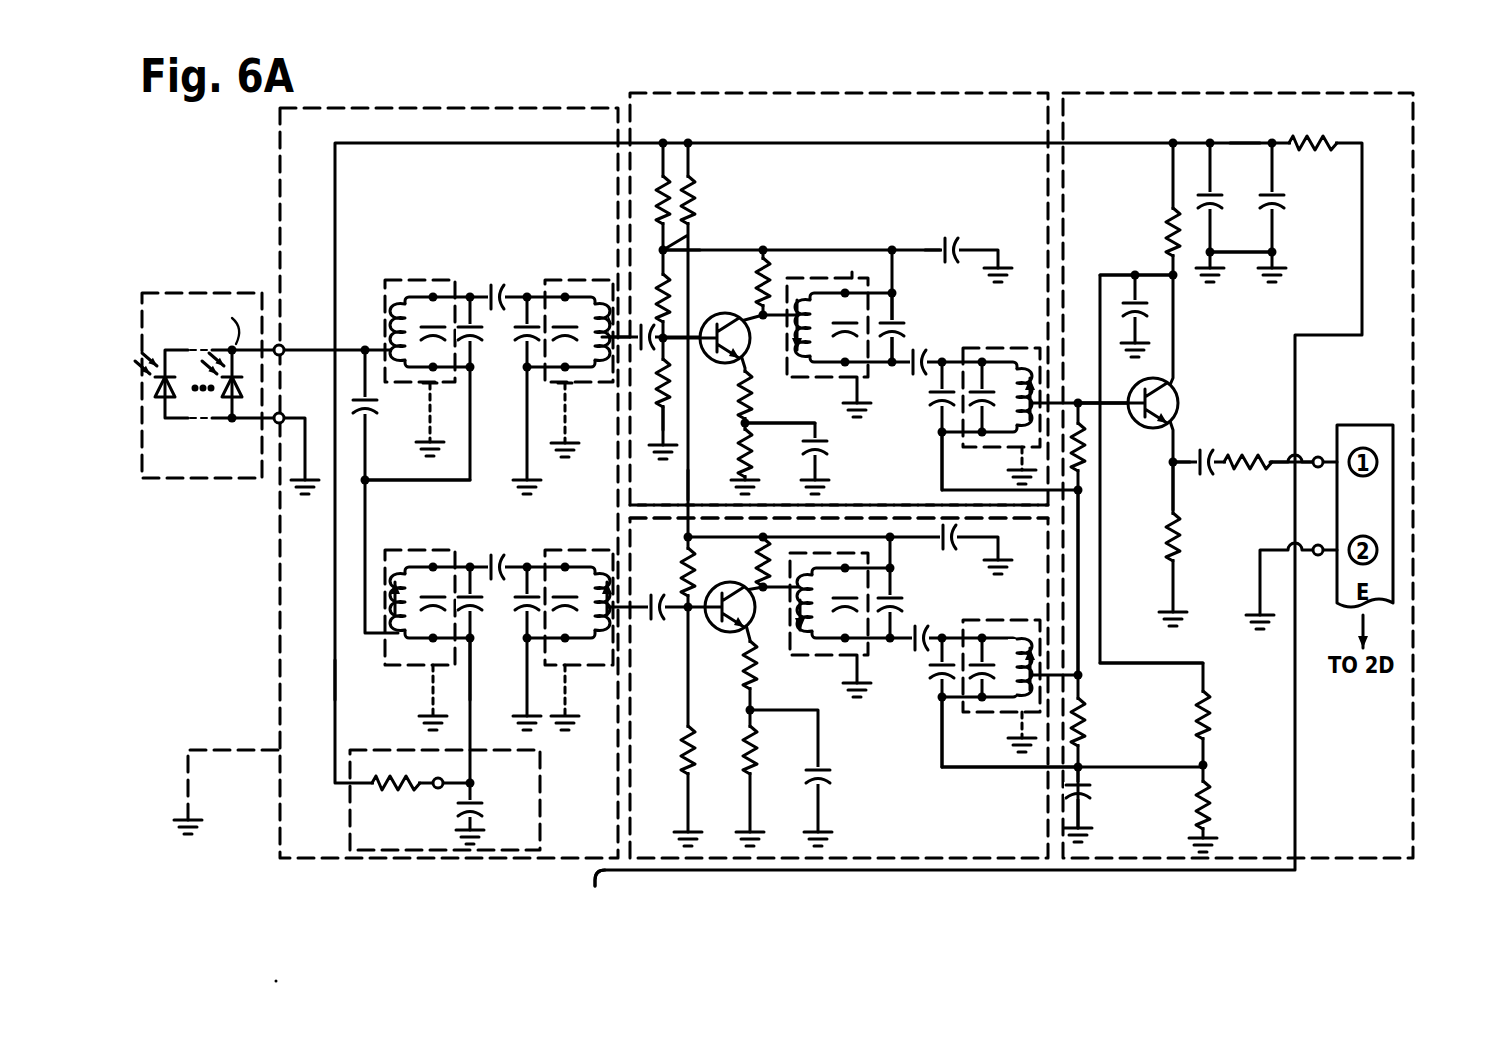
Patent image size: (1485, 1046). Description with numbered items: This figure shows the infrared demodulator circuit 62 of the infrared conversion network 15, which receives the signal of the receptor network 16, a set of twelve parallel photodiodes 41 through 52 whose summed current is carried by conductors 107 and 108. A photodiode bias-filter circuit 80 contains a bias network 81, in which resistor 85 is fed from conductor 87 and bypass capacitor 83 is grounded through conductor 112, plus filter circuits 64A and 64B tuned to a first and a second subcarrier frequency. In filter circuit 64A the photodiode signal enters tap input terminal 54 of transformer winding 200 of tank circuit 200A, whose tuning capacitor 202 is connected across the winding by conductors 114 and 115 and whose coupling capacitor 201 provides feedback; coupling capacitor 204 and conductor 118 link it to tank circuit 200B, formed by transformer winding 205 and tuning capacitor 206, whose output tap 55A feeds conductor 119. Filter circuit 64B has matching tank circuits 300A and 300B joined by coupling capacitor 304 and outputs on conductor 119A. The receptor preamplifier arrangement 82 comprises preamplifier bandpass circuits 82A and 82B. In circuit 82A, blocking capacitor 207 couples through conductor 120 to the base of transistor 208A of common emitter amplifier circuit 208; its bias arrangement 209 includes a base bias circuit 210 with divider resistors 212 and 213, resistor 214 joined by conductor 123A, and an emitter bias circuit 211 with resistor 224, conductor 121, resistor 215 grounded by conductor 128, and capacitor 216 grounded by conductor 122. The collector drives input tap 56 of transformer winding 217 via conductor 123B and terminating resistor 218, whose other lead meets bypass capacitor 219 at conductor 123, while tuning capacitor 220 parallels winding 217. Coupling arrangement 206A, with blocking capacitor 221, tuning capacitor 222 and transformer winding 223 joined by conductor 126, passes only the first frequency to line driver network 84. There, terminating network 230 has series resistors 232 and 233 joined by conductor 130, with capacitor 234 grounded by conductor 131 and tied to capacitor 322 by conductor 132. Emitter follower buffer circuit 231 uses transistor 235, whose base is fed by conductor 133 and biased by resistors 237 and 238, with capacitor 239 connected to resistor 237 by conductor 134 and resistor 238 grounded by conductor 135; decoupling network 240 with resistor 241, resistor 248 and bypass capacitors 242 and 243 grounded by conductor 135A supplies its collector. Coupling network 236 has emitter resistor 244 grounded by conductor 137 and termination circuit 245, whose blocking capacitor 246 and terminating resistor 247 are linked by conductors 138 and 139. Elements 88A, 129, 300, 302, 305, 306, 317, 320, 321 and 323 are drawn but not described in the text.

The infrared conversion network 15 is at (271, 796).
The receptor network 16 is at (160, 483).
The photodiode 41 is at (244, 392).
The photodiode 52 is at (158, 392).
The tap input terminal 54 is at (398, 345).
The output tap 55A is at (594, 337).
The input tap 56 is at (823, 290).
The infrared demodulator circuit 62 is at (590, 90).
The filter circuit 64A is at (378, 221).
The filter circuit 64B is at (377, 658).
The photodiode bias-filter circuit 80 is at (278, 626).
The bias network 81 is at (543, 804).
The receptor preamplifier arrangement 82 is at (951, 88).
The preamplifier bandpass circuit 82A is at (790, 94).
The preamplifier bandpass circuit 82B is at (612, 784).
The bypass capacitor 83 is at (468, 793).
The line driver network 84 is at (1193, 92).
The resistor 85 is at (380, 790).
The conductor 87 is at (335, 662).
The ground return 88A is at (589, 854).
The conductor 107 is at (250, 345).
The conductor 108 is at (237, 424).
The conductor 112 is at (479, 812).
The conductor 114 is at (466, 292).
The conductor 115 is at (940, 396).
The conductor 118 is at (548, 280).
The conductor 119 is at (636, 338).
The conductor 119A is at (653, 614).
The conductor 120 is at (712, 357).
The conductor 121 is at (821, 438).
The conductor 122 is at (748, 484).
The conductor 123 is at (893, 244).
The conductor 123A is at (688, 233).
The conductor 123B is at (806, 292).
The conductor 126 is at (944, 468).
The conductor 128 is at (674, 462).
The ground 129 is at (978, 262).
The conductor 130 is at (1080, 570).
The conductor 131 is at (1090, 812).
The conductor 132 is at (985, 769).
The conductor 133 is at (1120, 340).
The conductor 134 is at (1208, 664).
The conductor 135 is at (1213, 830).
The conductor 135A is at (1247, 254).
The conductor 137 is at (1172, 585).
The conductor 138 is at (1178, 500).
The conductor 139 is at (1240, 455).
The transformer winding 200 is at (405, 280).
The tank circuit 200A is at (448, 257).
The tank circuit 200B is at (538, 255).
The coupling capacitor 201 is at (378, 410).
The tuning capacitor 202 is at (476, 418).
The coupling capacitor 204 is at (480, 348).
The transformer winding 205 is at (582, 383).
The tuning capacitor 206 is at (505, 320).
The coupling arrangement 206A is at (1011, 341).
The direct current blocking capacitor 207 is at (745, 430).
The common emitter amplifier circuit 208 is at (788, 200).
The transistor 208A is at (757, 368).
The bias arrangement 209 is at (681, 481).
The base bias circuit 210 is at (690, 302).
The emitter bias circuit 211 is at (826, 466).
The resistor 212 is at (668, 250).
The resistor 213 is at (675, 426).
The resistor 214 is at (662, 216).
The resistor 215 is at (748, 456).
The capacitor 216 is at (825, 456).
The transformer inductor winding 217 is at (852, 272).
The resistor 218 is at (741, 285).
The bypass capacitor 219 is at (940, 252).
The tuning capacitor 220 is at (900, 330).
The direct current blocking capacitor 221 is at (915, 358).
The tuning capacitor 222 is at (940, 412).
The transformer winding 223 is at (1038, 350).
The resistor 224 is at (750, 402).
The terminating network 230 is at (1099, 800).
The emitter follower buffer circuit 231 is at (1208, 368).
The resistor 232 is at (1086, 458).
The resistor 233 is at (1088, 720).
The capacitor 234 is at (1096, 786).
The transistor 235 is at (1180, 402).
The coupling network 236 is at (1242, 518).
The resistor 237 is at (1210, 718).
The resistor 238 is at (1213, 795).
The capacitor 239 is at (1122, 312).
The decoupling network 240 is at (1113, 207).
The resistor 241 is at (1165, 225).
The a.c. bypass capacitor 242 is at (1222, 200).
The a.c. bypass capacitor 243 is at (1285, 200).
The emitter resistor 244 is at (1186, 562).
The termination circuit 245 is at (1218, 446).
The direct current blocking capacitor 246 is at (1200, 472).
The terminating resistor 247 is at (1270, 475).
The resistor 248 is at (1298, 140).
The tuned circuit primary 300 is at (405, 550).
The tank circuit 300A is at (455, 556).
The tank circuit 300B is at (583, 554).
The ground line 302 is at (498, 600).
The coupling capacitor 304 is at (494, 558).
The ground 305 is at (566, 672).
The tuned circuit 306 is at (922, 729).
The tuned circuit 317 is at (790, 658).
The capacitor 320 is at (901, 598).
The coupling capacitor 321 is at (922, 632).
The capacitor 322 is at (940, 668).
The tuned circuit 323 is at (985, 620).